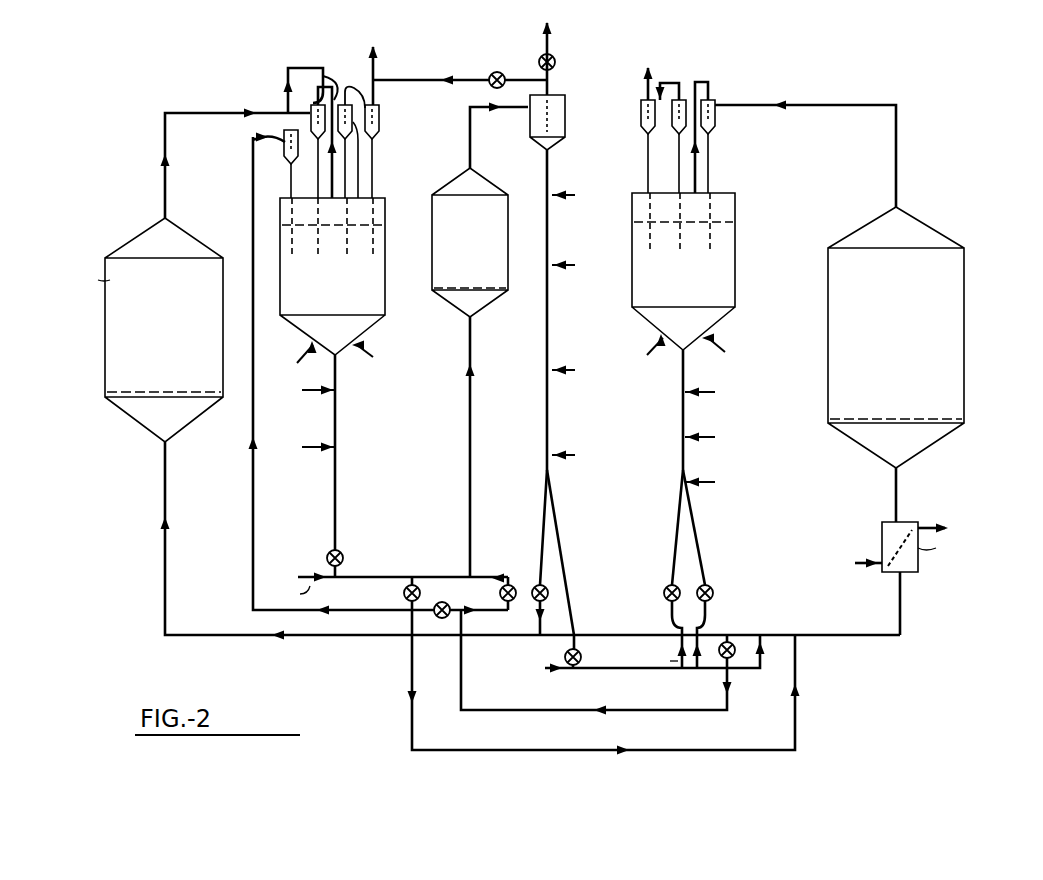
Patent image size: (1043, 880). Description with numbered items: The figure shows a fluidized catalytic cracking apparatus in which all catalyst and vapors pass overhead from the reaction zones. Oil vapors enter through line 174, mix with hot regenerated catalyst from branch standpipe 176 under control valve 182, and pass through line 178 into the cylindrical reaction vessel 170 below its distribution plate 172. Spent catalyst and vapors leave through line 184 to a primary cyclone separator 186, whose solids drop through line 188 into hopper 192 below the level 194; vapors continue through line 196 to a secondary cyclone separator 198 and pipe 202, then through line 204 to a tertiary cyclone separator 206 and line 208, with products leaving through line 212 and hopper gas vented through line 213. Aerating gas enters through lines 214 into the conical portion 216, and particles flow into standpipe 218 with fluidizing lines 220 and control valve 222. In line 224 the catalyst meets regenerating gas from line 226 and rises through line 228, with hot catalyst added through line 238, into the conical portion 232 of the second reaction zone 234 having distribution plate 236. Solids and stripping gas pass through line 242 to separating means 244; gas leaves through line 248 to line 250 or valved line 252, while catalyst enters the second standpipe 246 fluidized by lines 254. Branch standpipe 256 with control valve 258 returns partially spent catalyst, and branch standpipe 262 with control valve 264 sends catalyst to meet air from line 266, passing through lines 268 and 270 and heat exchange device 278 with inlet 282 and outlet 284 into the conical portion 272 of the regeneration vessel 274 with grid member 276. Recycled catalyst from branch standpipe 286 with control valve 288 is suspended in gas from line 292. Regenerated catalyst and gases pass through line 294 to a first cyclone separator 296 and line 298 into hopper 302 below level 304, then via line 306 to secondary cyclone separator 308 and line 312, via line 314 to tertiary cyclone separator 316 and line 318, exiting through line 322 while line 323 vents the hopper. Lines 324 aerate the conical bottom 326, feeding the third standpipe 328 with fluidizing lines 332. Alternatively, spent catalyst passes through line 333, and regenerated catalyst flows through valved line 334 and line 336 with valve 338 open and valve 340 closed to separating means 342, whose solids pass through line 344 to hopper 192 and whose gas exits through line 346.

The cylindrical reaction vessel 170 is at (104, 318).
The distribution plate or grid member 172 is at (125, 392).
The line 174 is at (665, 628).
The branch standpipe 176 is at (673, 534).
The line 178 is at (490, 638).
The control valve 182 is at (663, 585).
The line 184 is at (164, 130).
The primary cyclone separator 186 is at (284, 90).
The line 188 is at (308, 190).
The hopper 192 is at (384, 215).
The level 194 is at (384, 230).
The line 196 is at (341, 78).
The secondary cyclone separator 198 is at (372, 95).
The pipe 202 is at (334, 176).
The line 204 is at (379, 65).
The tertiary cyclone separator 206 is at (381, 108).
The line 208 is at (360, 195).
The line 212 is at (381, 46).
The line 213 is at (344, 156).
The lines 214 is at (380, 354).
The bottom conical portion 216 is at (390, 320).
The standpipe 218 is at (344, 360).
The fluidizing lines 220 is at (303, 443).
The control valve 222 is at (343, 558).
The line 224 is at (373, 576).
The line 226 is at (313, 566).
The line 228 is at (477, 430).
The bottom conical portion 232 is at (495, 310).
The second reaction zone or stripping zone 234 is at (510, 250).
The distribution plate 236 is at (458, 288).
The line 238 is at (486, 570).
The line 242 is at (476, 132).
The separating means 244 is at (570, 114).
The second standpipe 246 is at (553, 156).
The line 248 is at (555, 68).
The line 250 is at (553, 26).
The valved line 252 is at (510, 66).
The lines 254 is at (559, 257).
The branch standpipe 256 is at (535, 537).
The control valve 258 is at (572, 613).
The branch standpipe 262 is at (571, 554).
The control valve 264 is at (581, 660).
The line 266 is at (549, 674).
The line 268 is at (631, 672).
The line 270 is at (858, 648).
The bottom conical portion 272 is at (955, 440).
The regeneration zone or vessel 274 is at (969, 284).
The perforated distribution plate or grid member 276 is at (969, 414).
The heat exchange device 278 is at (879, 528).
The inlet 282 is at (868, 565).
The outlet 284 is at (924, 520).
The branch standpipe 286 is at (703, 536).
The control valve 288 is at (719, 586).
The line 292 is at (723, 632).
The line 294 is at (906, 128).
The first cyclone separator 296 is at (721, 104).
The line 298 is at (719, 186).
The regenerated catalyst hopper 302 is at (738, 196).
The level 304 is at (740, 222).
The line 306 is at (714, 88).
The secondary cyclone separator 308 is at (674, 90).
The line 312 is at (678, 178).
The line 314 is at (662, 73).
The tertiary cyclone separator 316 is at (641, 130).
The line 318 is at (646, 158).
The line 322 is at (629, 70).
The line 323 is at (709, 152).
The lines 324 is at (726, 342).
The conical bottom 326 is at (732, 308).
The third standpipe 328 is at (680, 376).
The fluidizing lines 332 is at (706, 439).
The line 333 is at (693, 750).
The valved line 334 is at (541, 710).
The line 336 is at (348, 596).
The valve 338 is at (441, 606).
The valve 340 is at (515, 612).
The separating means 342 is at (250, 146).
The line 344 is at (258, 194).
The line 346 is at (282, 58).